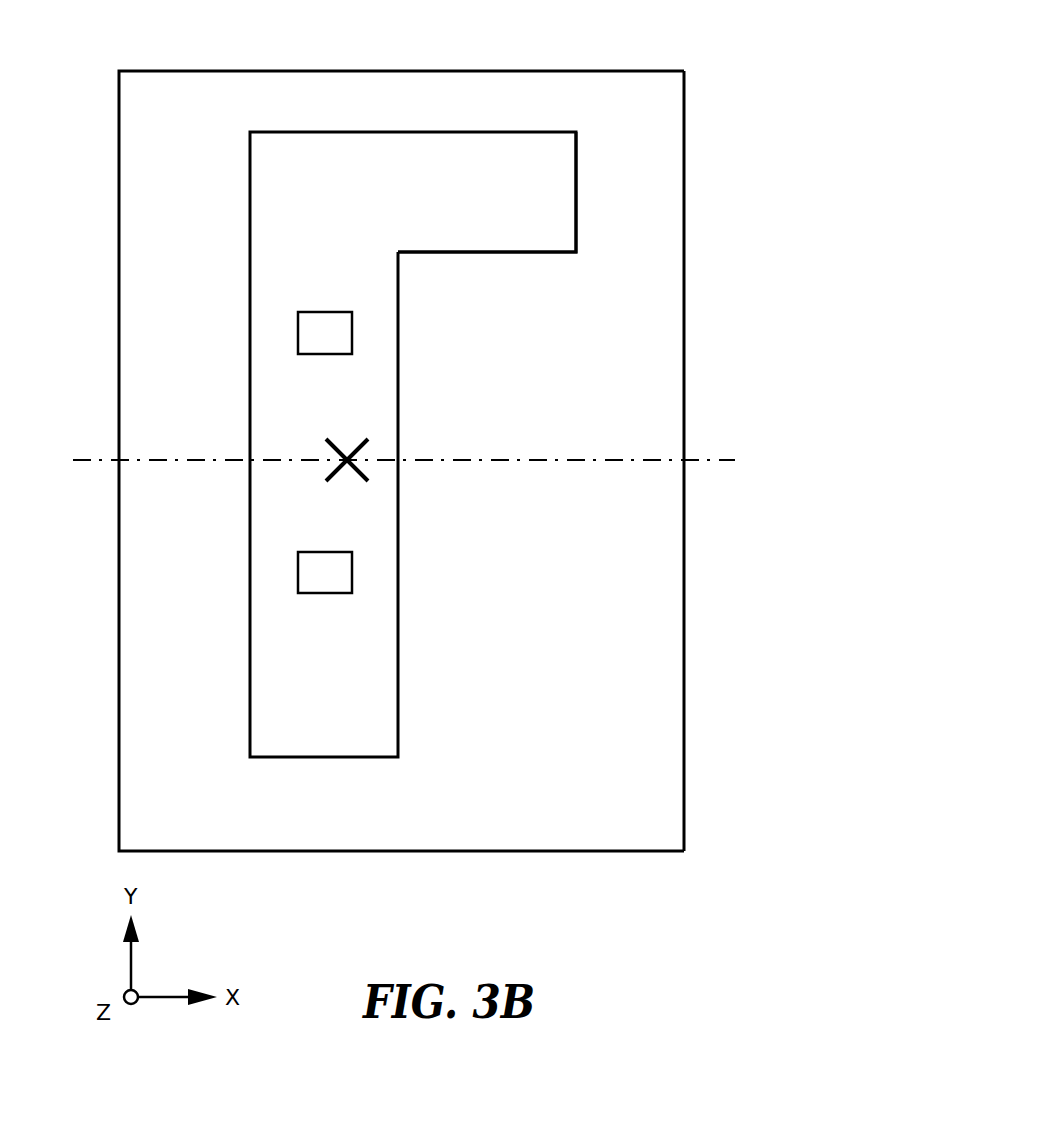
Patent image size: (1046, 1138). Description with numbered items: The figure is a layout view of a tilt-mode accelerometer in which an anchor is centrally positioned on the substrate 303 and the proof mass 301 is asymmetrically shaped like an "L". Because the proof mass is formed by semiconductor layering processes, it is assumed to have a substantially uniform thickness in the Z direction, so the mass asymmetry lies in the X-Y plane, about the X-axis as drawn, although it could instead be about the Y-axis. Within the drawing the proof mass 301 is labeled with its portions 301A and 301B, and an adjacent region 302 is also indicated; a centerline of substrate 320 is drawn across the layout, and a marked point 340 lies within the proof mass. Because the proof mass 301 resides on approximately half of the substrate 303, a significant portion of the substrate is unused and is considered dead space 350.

The proof mass 301 is at (304, 384).
The first portion of pattern feature 301A is at (353, 703).
The second portion of pattern feature 301B is at (418, 155).
The arm region of pattern feature 302 is at (549, 190).
The substrate 303 is at (634, 664).
The substrate 320 is at (475, 460).
The center point 340 is at (343, 457).
The dead space 350 is at (634, 608).